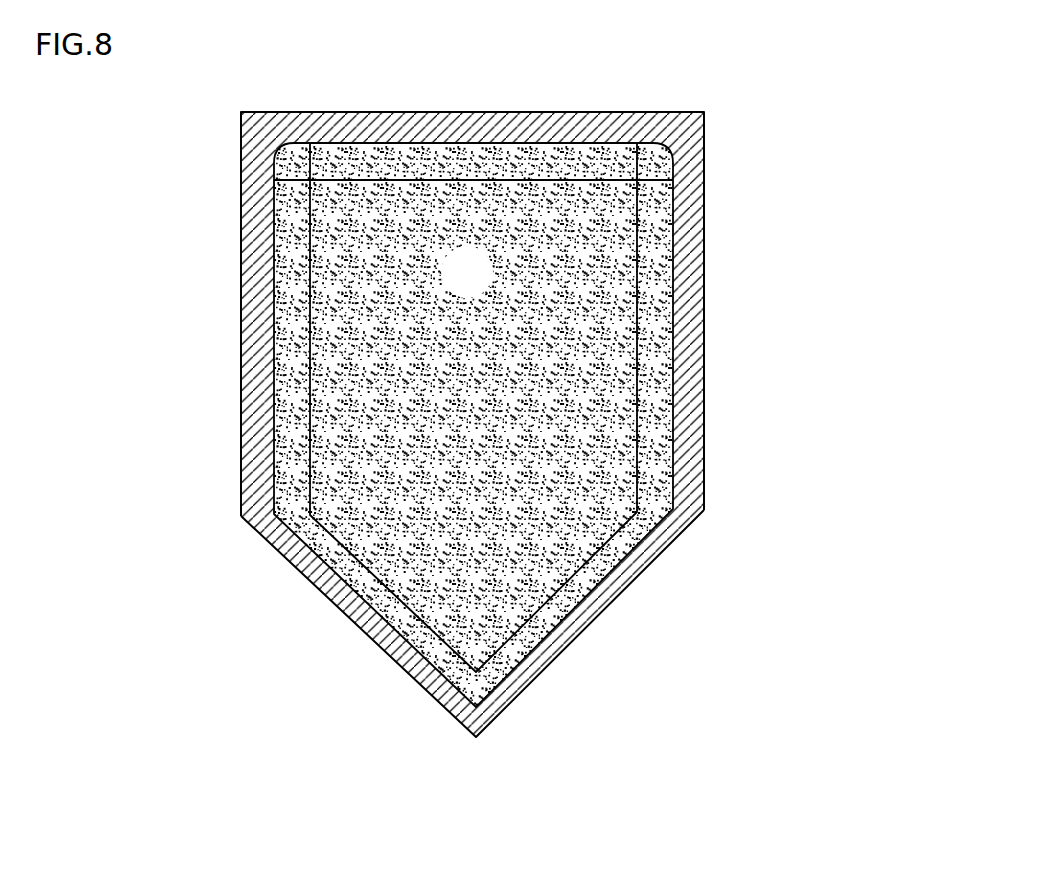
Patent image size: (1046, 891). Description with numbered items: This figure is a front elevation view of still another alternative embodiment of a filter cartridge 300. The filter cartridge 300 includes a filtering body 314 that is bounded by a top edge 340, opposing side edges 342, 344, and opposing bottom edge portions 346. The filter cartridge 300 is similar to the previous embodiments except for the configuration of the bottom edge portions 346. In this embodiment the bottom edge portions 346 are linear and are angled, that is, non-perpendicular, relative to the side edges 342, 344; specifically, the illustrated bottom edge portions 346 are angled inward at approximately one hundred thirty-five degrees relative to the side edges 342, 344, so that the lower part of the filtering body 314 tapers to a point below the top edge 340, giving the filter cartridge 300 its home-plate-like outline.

The filter cartridge 300 is at (742, 212).
The filtering body 314 is at (485, 280).
The top edge 340 is at (478, 142).
The side edge 342 is at (273, 322).
The side edge 344 is at (673, 335).
The bottom edge portions 346 is at (357, 593).